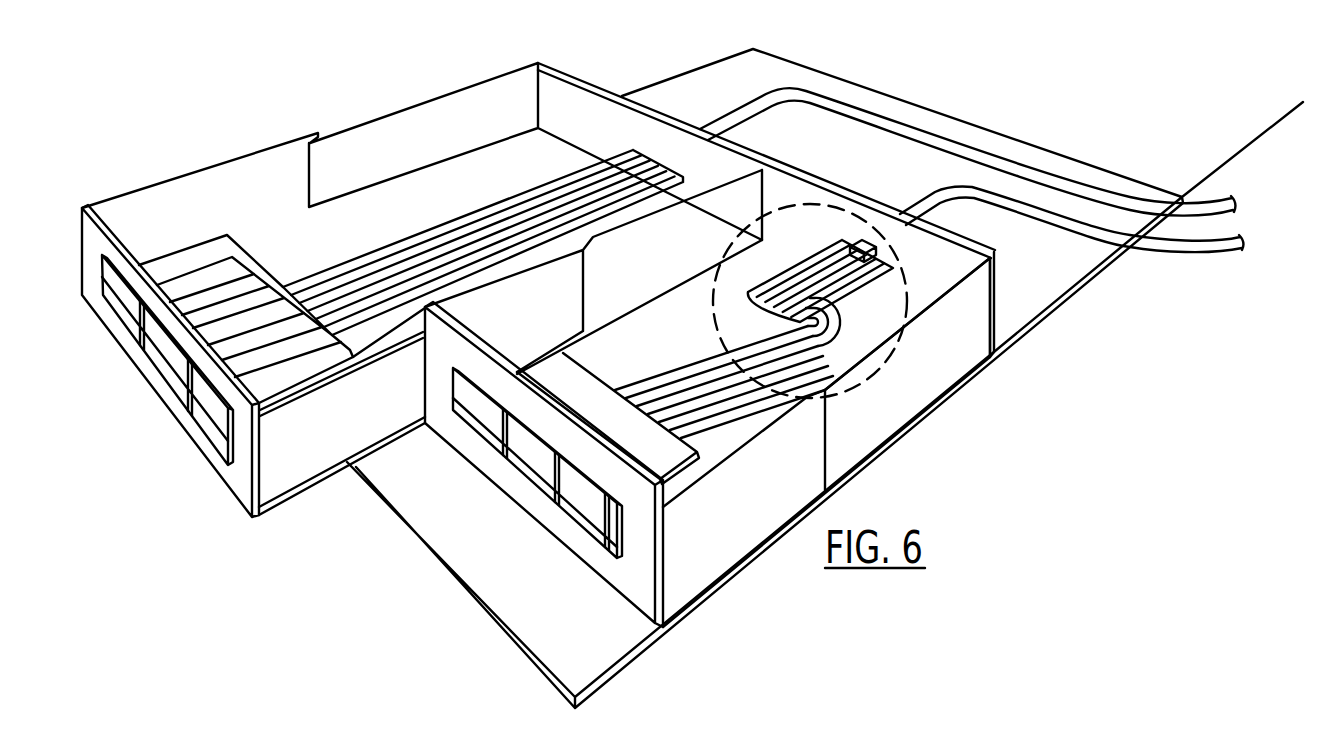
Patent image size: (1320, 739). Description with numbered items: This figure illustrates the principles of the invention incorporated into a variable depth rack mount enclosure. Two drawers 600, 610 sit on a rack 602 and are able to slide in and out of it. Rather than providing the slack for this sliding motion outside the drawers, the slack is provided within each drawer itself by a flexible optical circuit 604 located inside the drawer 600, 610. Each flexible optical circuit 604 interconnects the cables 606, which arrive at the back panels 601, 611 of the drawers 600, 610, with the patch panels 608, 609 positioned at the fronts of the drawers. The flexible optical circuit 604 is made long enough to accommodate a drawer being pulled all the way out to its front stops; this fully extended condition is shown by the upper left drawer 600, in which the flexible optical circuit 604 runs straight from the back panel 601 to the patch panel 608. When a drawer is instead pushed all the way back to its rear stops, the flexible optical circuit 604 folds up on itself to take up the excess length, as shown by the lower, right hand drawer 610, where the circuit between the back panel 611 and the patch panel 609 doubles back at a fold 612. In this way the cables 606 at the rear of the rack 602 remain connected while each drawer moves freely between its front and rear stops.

The drawer 600 is at (396, 323).
The back panel 601 is at (583, 84).
The rack 602 is at (781, 76).
The flexible optical circuit 604 is at (490, 213).
The cables 606 is at (902, 130).
The patch panel 608 is at (88, 262).
The patch panel 609 is at (633, 567).
The drawer 610 is at (754, 440).
The back panel 611 is at (965, 268).
The fold 612 is at (935, 308).